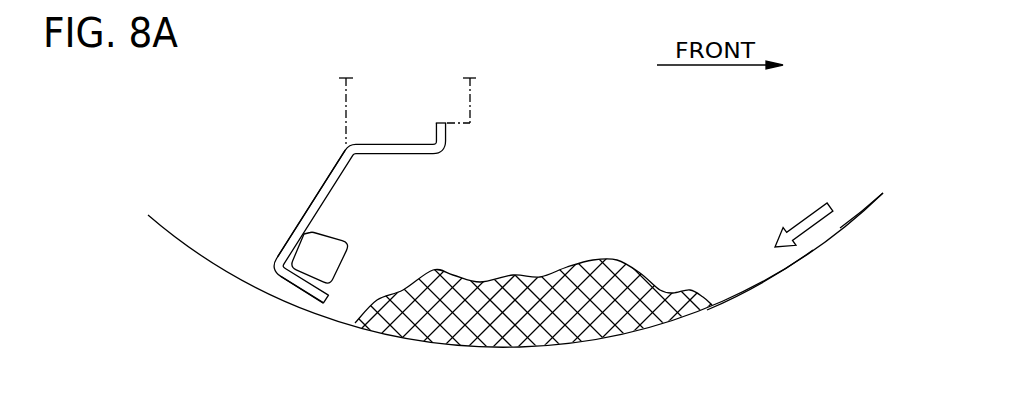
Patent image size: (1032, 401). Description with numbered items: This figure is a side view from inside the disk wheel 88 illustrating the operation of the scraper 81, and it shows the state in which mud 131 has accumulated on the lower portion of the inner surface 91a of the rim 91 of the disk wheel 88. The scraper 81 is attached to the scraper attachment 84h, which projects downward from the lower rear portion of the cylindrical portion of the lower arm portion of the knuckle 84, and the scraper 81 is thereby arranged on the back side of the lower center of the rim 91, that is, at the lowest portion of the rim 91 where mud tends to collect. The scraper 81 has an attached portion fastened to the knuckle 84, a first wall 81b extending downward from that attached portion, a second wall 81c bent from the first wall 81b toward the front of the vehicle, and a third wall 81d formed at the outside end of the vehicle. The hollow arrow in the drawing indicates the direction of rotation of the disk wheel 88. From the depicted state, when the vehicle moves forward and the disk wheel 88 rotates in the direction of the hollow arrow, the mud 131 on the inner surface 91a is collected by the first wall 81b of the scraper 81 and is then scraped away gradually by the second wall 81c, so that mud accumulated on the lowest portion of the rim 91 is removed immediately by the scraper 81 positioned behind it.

The scraper 81 is at (313, 174).
The first wall 81b is at (307, 217).
The second wall 81c is at (300, 285).
The third wall 81d is at (333, 273).
The knuckle 84 is at (473, 95).
The scraper attachment 84h is at (347, 120).
The disk wheel 88 is at (862, 193).
The rim 91 is at (182, 225).
The inner surface of the rim 91a is at (732, 297).
The mud 131 is at (520, 287).